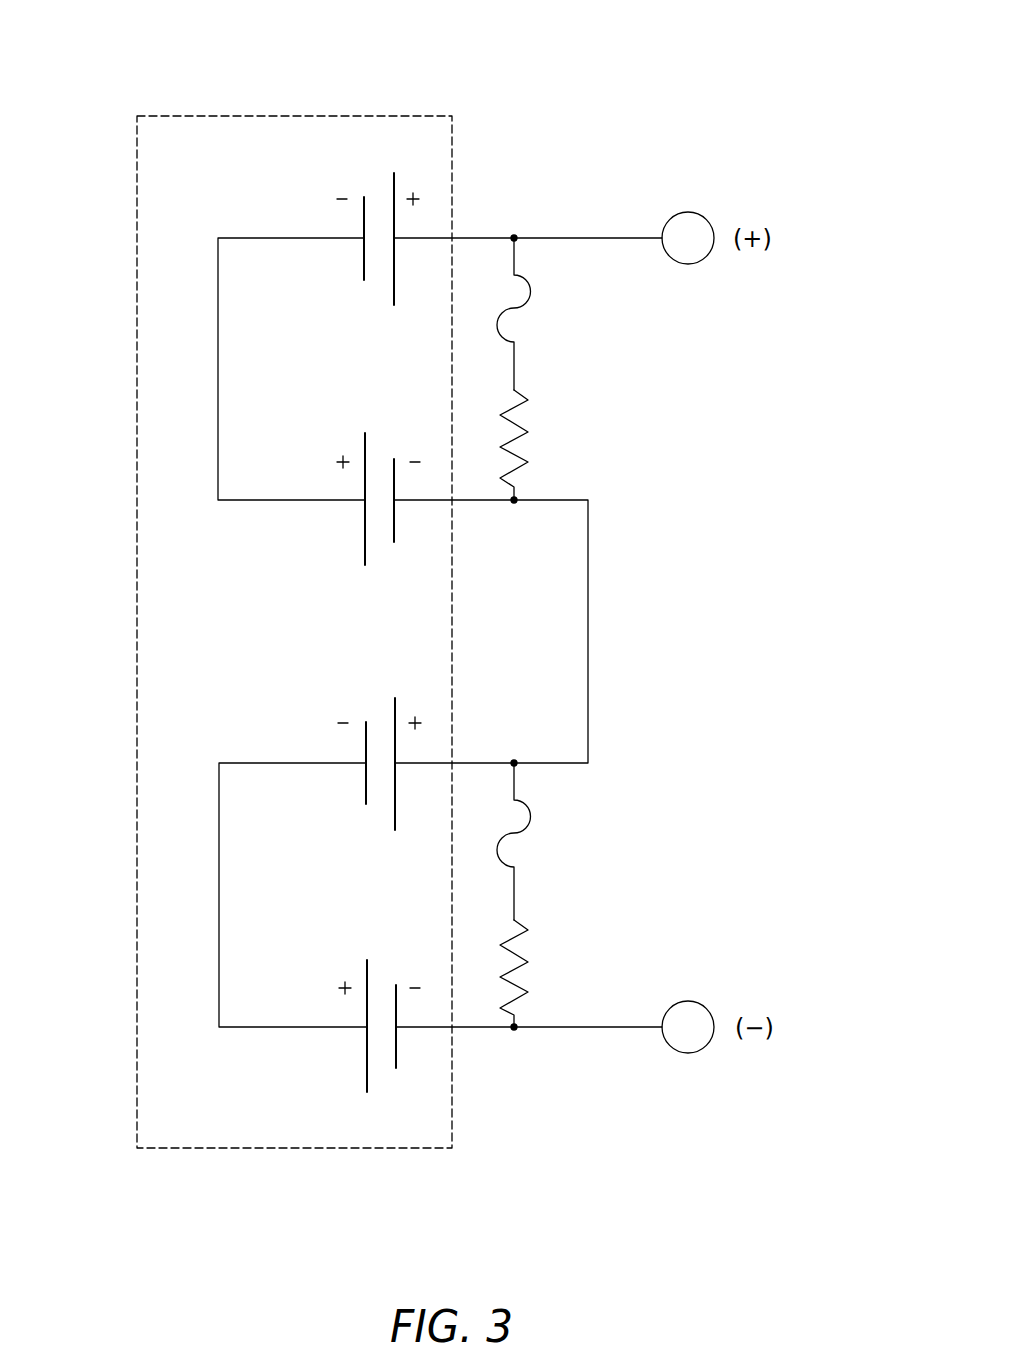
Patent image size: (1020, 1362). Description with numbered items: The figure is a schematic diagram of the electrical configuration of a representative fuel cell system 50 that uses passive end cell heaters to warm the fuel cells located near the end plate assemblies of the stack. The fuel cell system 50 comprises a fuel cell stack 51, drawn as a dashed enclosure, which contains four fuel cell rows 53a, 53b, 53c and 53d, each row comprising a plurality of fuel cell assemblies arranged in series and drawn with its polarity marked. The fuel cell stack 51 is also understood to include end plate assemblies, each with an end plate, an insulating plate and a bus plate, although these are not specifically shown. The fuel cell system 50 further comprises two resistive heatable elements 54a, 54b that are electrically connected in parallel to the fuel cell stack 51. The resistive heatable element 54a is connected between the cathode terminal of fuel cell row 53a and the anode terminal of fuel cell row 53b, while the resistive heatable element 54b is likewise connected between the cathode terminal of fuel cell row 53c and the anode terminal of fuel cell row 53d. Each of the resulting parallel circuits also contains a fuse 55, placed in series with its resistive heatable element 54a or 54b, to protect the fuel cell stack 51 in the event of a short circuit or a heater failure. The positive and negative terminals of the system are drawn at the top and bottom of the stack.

The fuel cell system 50 is at (748, 54).
The fuel cell stack 51 is at (295, 1148).
The fuel cell row 53a is at (364, 220).
The fuel cell row 53b is at (365, 482).
The fuel cell row 53c is at (366, 745).
The fuel cell row 53d is at (367, 1008).
The resistive heatable element 54a is at (520, 447).
The resistive heatable element 54b is at (520, 972).
The fuse 55 is at (518, 308).